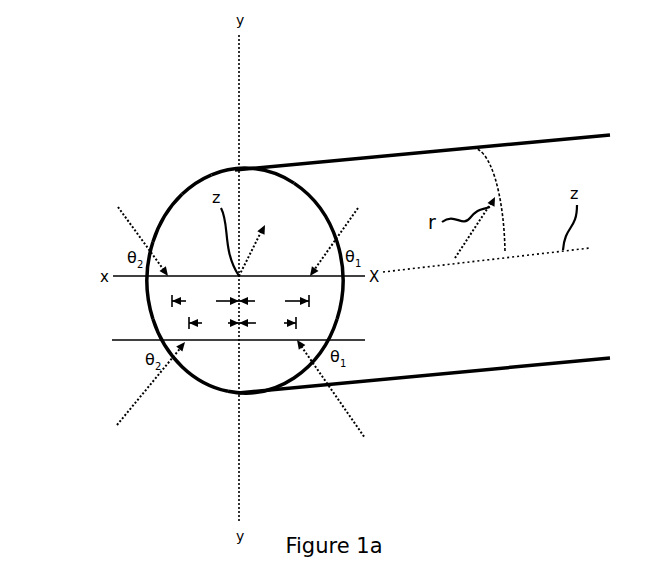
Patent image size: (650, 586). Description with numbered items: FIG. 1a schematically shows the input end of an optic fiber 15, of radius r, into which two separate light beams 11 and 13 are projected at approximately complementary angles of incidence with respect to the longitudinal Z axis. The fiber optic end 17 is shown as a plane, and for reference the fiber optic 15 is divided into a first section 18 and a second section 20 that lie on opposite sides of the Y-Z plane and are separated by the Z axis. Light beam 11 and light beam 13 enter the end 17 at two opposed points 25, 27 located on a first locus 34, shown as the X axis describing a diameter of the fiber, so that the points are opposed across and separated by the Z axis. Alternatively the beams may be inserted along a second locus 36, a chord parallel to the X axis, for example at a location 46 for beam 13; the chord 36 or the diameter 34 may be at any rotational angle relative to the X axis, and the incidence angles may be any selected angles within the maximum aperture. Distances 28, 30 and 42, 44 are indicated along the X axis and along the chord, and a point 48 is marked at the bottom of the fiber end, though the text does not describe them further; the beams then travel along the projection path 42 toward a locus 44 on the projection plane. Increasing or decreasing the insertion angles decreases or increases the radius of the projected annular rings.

The light beam 11 is at (122, 208).
The light beam 13 is at (356, 211).
The optic fiber 15 is at (497, 145).
The fiber optic end 17 is at (196, 215).
The first section 18 is at (223, 186).
The second section 20 is at (262, 171).
The point 25 is at (171, 276).
The point 27 is at (304, 268).
The first distance 28 is at (205, 301).
The second distance 30 is at (274, 301).
The first locus 34 is at (175, 281).
The second locus 36 is at (113, 341).
The projection path 42 is at (214, 323).
The locus 44 is at (267, 323).
The location 46 is at (294, 345).
The bottom point 48 is at (240, 342).